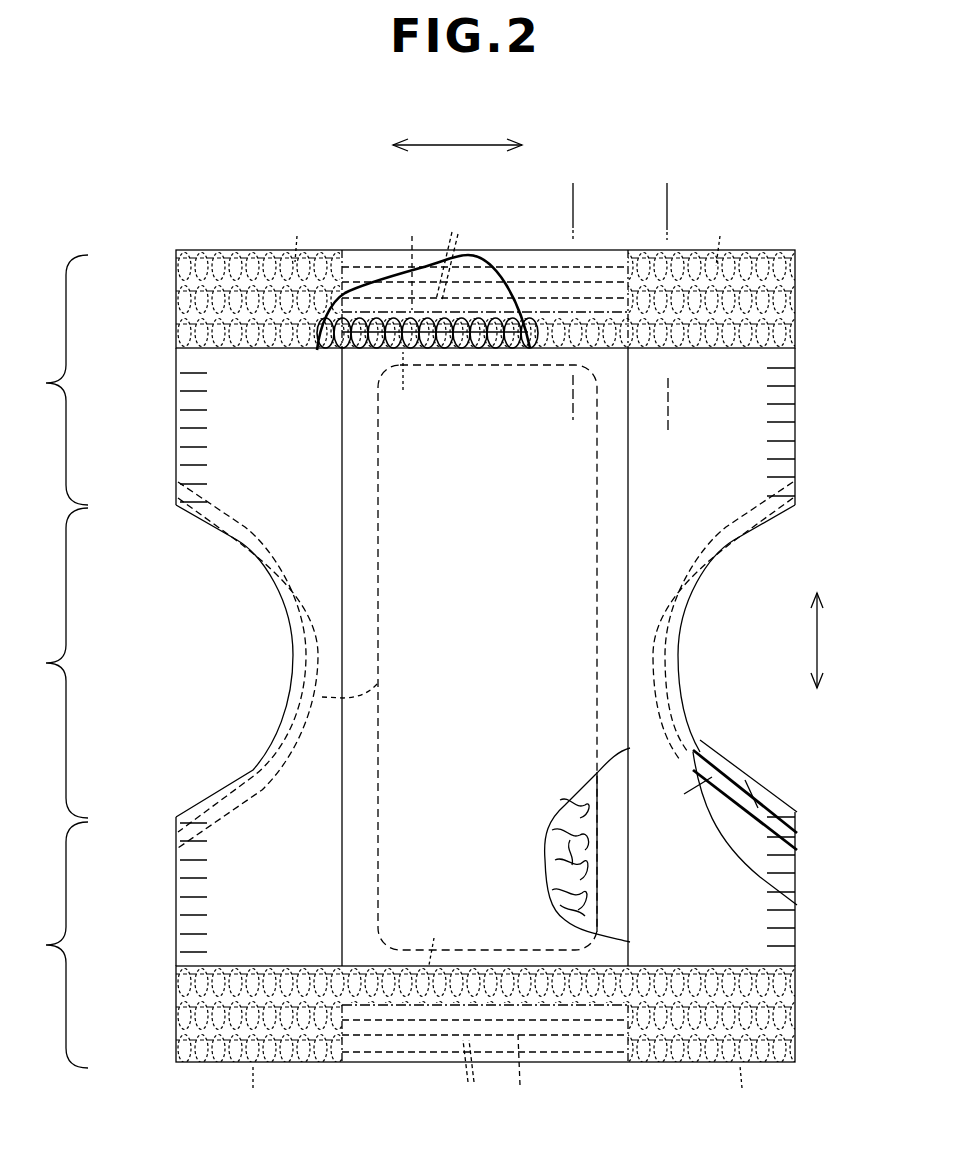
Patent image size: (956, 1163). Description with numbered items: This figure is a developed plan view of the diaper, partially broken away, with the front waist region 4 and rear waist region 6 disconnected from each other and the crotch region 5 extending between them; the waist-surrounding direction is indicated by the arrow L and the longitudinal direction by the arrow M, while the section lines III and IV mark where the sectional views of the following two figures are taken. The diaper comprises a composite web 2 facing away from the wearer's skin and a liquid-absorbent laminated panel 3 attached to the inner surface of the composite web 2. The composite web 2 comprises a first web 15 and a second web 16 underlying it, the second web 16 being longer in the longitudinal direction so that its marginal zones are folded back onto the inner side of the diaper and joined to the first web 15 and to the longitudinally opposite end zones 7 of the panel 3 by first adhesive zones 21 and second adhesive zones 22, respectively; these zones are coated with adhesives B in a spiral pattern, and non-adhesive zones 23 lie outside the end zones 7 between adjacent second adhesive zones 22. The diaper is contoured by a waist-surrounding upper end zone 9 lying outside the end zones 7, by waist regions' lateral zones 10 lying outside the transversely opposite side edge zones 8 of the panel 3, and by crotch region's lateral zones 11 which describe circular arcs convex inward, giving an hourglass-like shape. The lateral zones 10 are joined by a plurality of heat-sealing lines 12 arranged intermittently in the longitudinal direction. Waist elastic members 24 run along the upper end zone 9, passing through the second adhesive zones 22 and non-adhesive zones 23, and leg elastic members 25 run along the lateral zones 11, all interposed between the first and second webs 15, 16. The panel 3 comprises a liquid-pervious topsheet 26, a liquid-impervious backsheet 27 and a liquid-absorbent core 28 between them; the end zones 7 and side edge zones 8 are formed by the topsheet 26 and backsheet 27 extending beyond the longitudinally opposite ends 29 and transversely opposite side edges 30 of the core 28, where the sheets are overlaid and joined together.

The composite web 2 is at (797, 252).
The liquid-absorbent laminated panel 3 is at (632, 565).
The front waist region 4 is at (52, 945).
The crotch region 5 is at (52, 663).
The rear waist region 6 is at (52, 380).
The longitudinally opposite end zones 7 is at (483, 357).
The transversely opposite side edge zones 8 is at (352, 625).
The waist-surrounding upper end zone 9 is at (587, 303).
The waist regions' lateral zones 10 is at (222, 366).
The crotch region's lateral zones 11 is at (303, 760).
The heat-sealing lines 12 is at (203, 410).
The first web 15 is at (700, 782).
The second web 16 is at (715, 806).
The first adhesive zones 21 is at (260, 340).
The second adhesive zones 22 is at (238, 292).
The non-adhesive zones 23 is at (535, 307).
The waist elastic members 24 is at (459, 659).
The leg elastic members 25 is at (750, 798).
The liquid-pervious topsheet 26 is at (540, 520).
The liquid-impervious backsheet 27 is at (613, 803).
The liquid-absorbent core 28 is at (567, 820).
The longitudinally opposite ends 29 is at (460, 664).
The transversely opposite side edges 30 is at (322, 697).
The adhesives B is at (495, 663).
The waist-surrounding direction L is at (450, 145).
The longitudinal direction M is at (818, 648).
The line III— III is at (573, 309).
The line IV— IV is at (666, 311).